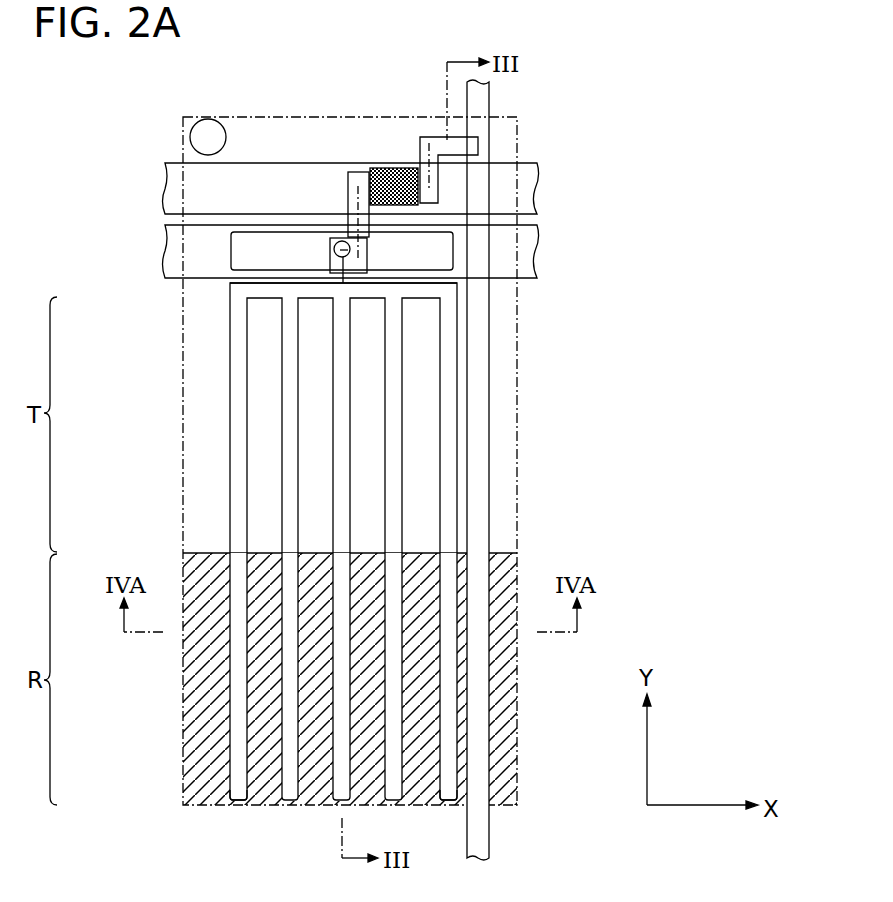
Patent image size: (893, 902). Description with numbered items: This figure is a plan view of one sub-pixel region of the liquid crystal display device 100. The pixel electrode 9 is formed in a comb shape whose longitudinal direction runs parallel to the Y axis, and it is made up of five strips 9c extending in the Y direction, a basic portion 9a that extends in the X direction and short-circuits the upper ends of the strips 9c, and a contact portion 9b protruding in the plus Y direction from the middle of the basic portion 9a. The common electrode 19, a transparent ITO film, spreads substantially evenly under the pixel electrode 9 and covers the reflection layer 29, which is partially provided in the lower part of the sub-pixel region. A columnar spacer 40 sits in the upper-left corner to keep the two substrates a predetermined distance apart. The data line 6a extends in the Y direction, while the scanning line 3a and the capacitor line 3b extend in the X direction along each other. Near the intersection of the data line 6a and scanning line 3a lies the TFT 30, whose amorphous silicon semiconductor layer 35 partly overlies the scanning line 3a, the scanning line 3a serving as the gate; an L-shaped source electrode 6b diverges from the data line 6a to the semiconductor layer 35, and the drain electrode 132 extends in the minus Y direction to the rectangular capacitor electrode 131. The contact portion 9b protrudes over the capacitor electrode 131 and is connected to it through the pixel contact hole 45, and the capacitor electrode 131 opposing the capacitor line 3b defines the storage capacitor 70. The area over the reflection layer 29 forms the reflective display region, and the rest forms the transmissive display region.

The liquid crystal display device 100 is at (537, 85).
The common electrode 19 is at (517, 368).
The scanning line 3a is at (172, 165).
The capacitor line 3b is at (162, 272).
The columnar spacer 40 is at (204, 127).
The capacitor electrode 131 is at (245, 245).
The storage capacitor 70 is at (216, 258).
The TFT 30 is at (365, 150).
The drain electrode 132 is at (354, 172).
The semiconductor layer 35 is at (397, 168).
The source electrode 6b is at (431, 138).
The pixel contact hole 45 is at (333, 258).
The contact portion 9b is at (362, 271).
The reflection layer 29 is at (513, 688).
The pixel electrode 9 is at (220, 418).
The basic portion 9a is at (270, 292).
The strips 9c is at (237, 790).
The data line 6a is at (483, 836).